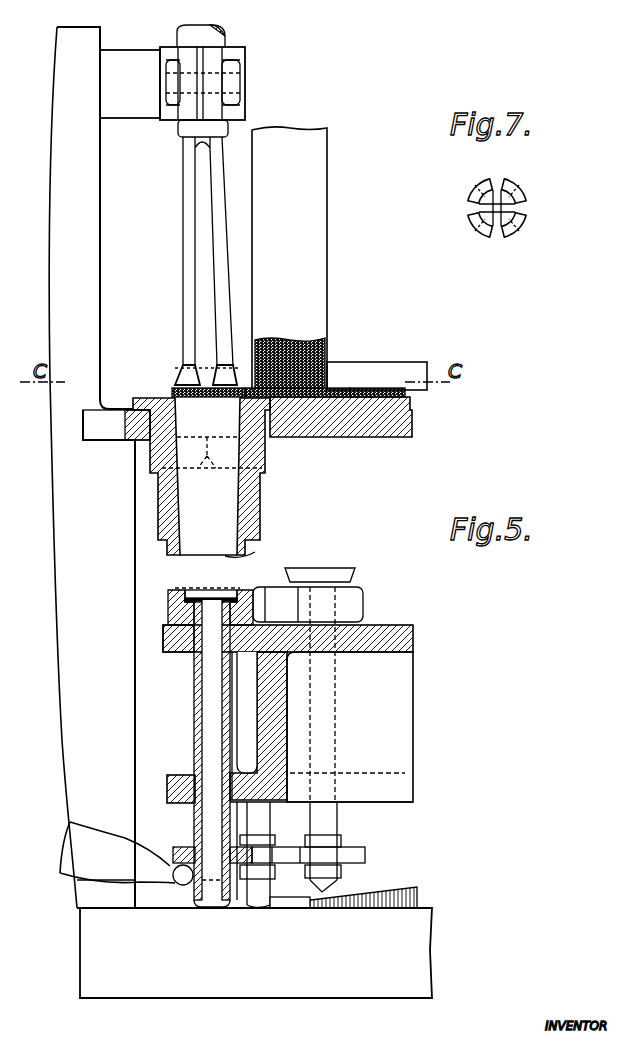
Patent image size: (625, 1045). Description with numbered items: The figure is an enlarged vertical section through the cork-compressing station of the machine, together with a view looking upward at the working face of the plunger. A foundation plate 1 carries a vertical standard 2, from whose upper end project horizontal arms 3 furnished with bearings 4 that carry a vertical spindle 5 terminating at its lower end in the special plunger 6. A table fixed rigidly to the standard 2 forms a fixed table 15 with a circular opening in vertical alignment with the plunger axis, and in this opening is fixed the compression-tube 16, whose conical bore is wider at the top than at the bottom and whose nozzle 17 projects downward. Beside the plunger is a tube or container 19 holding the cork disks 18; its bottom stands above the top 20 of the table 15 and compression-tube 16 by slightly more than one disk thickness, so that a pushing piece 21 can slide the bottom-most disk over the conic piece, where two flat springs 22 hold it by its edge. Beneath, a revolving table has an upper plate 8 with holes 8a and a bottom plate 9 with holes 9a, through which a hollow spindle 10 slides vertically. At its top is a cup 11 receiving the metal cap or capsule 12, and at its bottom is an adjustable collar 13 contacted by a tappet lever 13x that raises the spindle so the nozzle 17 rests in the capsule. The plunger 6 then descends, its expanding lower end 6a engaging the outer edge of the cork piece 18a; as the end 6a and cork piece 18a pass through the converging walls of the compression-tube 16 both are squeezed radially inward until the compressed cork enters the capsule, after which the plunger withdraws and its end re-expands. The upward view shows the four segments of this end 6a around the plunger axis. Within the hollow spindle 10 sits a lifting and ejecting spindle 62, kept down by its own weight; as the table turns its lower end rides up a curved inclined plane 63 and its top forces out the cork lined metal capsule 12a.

In FIG. 5, the foundation plate 1 is at (256, 953).
In FIG. 5, the vertical bracket or standard 2 is at (100, 268).
In FIG. 5, the horizontal arms 3 is at (130, 84).
In FIG. 5, the bearings 4 is at (224, 80).
In FIG. 5, the vertical spindle 5 is at (226, 31).
In FIG. 5, the special plunger 6 is at (217, 293).
In FIG. 5, the lower end of plunger 6a is at (222, 375).
In FIG. 7, the lower end of plunger 6a is at (548, 235).
In FIG. 5, the upper plate of table 8 is at (413, 635).
In FIG. 5, the holes in upper plate 8a is at (163, 640).
In FIG. 5, the bottom plate of table 9 is at (405, 802).
In FIG. 5, the holes in bottom plate 9a is at (167, 785).
In FIG. 5, the hollow spindle 10 is at (194, 720).
In FIG. 5, the cup 11 is at (168, 606).
In FIG. 5, the metal cap or capsule 12 is at (185, 590).
In FIG. 5, the cork lined metal capsule 12a is at (320, 578).
In FIG. 5, the vertically adjustable collar 13 is at (183, 846).
In FIG. 5, the tappet lever 13x is at (126, 853).
In FIG. 5, the fixed table 15 is at (95, 442).
In FIG. 5, the compression-tube 16 is at (177, 406).
In FIG. 5, the nozzle 17 is at (251, 543).
In FIG. 5, the cork disks 18 is at (315, 342).
In FIG. 5, the cork piece 18a is at (175, 392).
In FIG. 5, the tube or container 19 is at (289, 258).
In FIG. 5, the top of table 20 is at (330, 390).
In FIG. 5, the pushing piece 21 is at (375, 390).
In FIG. 5, the flat springs 22 is at (385, 370).
In FIG. 5, the lifting and ejecting spindle 62 is at (200, 685).
In FIG. 5, the curved inclined plane 63 is at (405, 892).